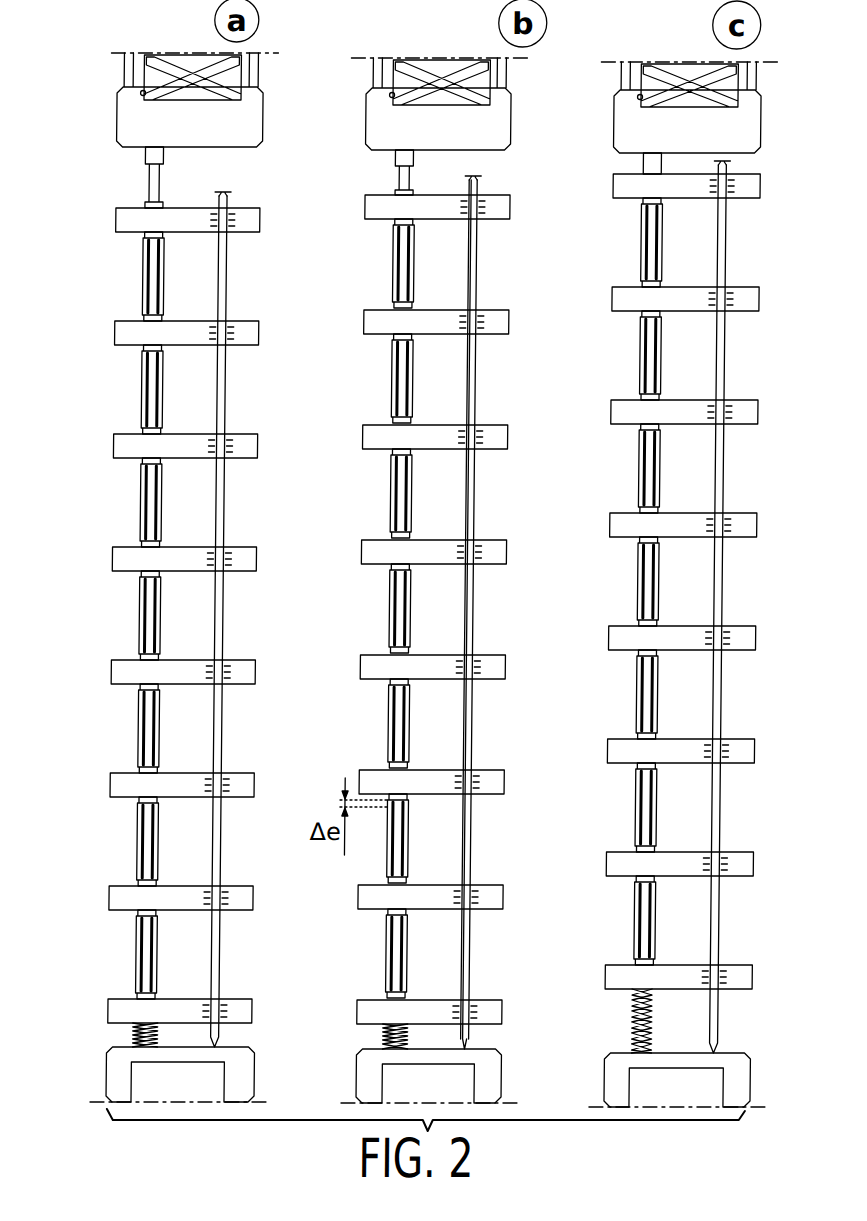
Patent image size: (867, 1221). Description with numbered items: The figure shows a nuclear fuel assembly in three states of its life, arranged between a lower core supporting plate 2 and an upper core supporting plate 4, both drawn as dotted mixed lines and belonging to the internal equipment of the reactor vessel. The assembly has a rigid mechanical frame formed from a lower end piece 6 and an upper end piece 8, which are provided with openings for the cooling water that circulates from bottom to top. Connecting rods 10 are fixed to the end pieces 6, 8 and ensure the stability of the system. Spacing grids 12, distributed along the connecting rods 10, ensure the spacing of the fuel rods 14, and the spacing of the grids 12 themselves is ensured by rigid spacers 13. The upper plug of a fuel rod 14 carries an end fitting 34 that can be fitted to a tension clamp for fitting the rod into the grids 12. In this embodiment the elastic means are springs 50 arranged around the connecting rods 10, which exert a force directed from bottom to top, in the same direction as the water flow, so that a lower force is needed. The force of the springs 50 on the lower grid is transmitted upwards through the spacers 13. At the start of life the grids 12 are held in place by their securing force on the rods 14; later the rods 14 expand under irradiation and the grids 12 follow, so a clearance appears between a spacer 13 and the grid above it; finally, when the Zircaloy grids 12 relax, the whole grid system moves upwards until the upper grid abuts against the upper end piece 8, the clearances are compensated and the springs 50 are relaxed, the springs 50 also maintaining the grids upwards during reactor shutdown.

The lower core supporting plate 2 is at (267, 1102).
The upper core supporting plate 4 is at (272, 52).
The lower end piece 6 is at (245, 1053).
The upper end piece 8 is at (260, 108).
The connecting rod 10 is at (153, 292).
The spacing grid 12 is at (260, 215).
The rigid spacer 13 is at (162, 415).
The fuel rod 14 is at (227, 255).
The end fitting 34 is at (226, 192).
The spring 50 is at (143, 1045).